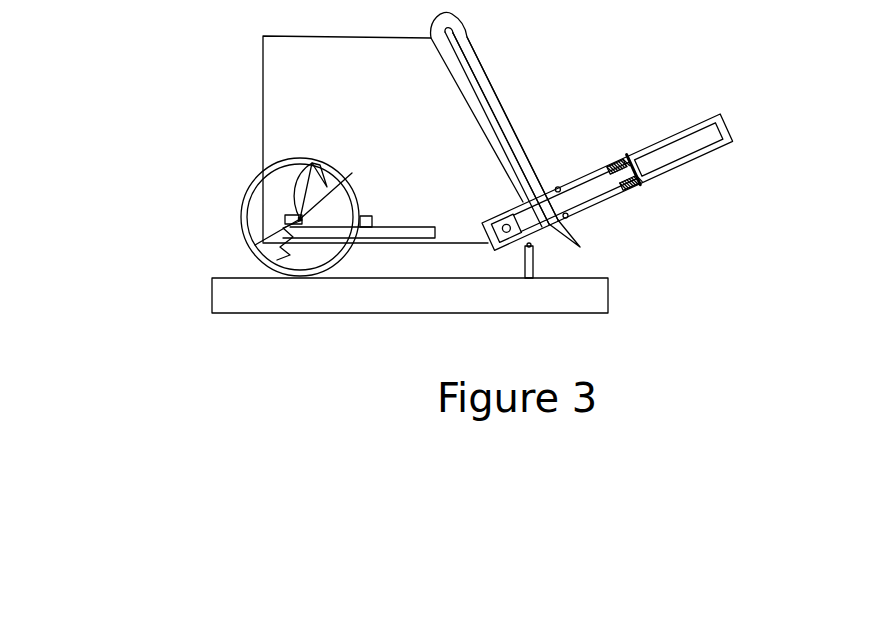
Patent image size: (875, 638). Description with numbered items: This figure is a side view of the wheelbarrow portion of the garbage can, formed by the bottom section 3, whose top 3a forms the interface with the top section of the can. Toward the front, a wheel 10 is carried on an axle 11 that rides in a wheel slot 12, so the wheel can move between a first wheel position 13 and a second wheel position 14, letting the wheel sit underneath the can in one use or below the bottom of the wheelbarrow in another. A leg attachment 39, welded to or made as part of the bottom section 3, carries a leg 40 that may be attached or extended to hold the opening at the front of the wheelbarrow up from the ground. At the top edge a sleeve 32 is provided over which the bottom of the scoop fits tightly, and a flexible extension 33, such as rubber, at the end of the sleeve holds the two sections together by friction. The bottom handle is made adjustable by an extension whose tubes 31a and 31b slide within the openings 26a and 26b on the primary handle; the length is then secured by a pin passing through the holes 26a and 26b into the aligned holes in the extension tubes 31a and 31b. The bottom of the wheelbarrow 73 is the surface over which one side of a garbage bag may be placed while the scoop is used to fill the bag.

The bottom section 3 is at (292, 62).
The top of the bottom section 3a is at (500, 97).
The wheel 10 is at (260, 181).
The axle 11 is at (300, 217).
The wheel slot 12 is at (268, 262).
The first wheel position 13 is at (322, 167).
The second wheel position 14 is at (364, 215).
The opening in primary handle 26a is at (650, 199).
The hole in primary handle 26b is at (642, 191).
The handle extension tube 31a is at (710, 155).
The handle extension tube 31b is at (614, 162).
The sleeve 32 is at (467, 37).
The flexible extension 33 is at (511, 128).
The leg attachment 39 is at (587, 232).
The leg 40 is at (533, 273).
The bottom of the wheelbarrow 73 is at (227, 295).